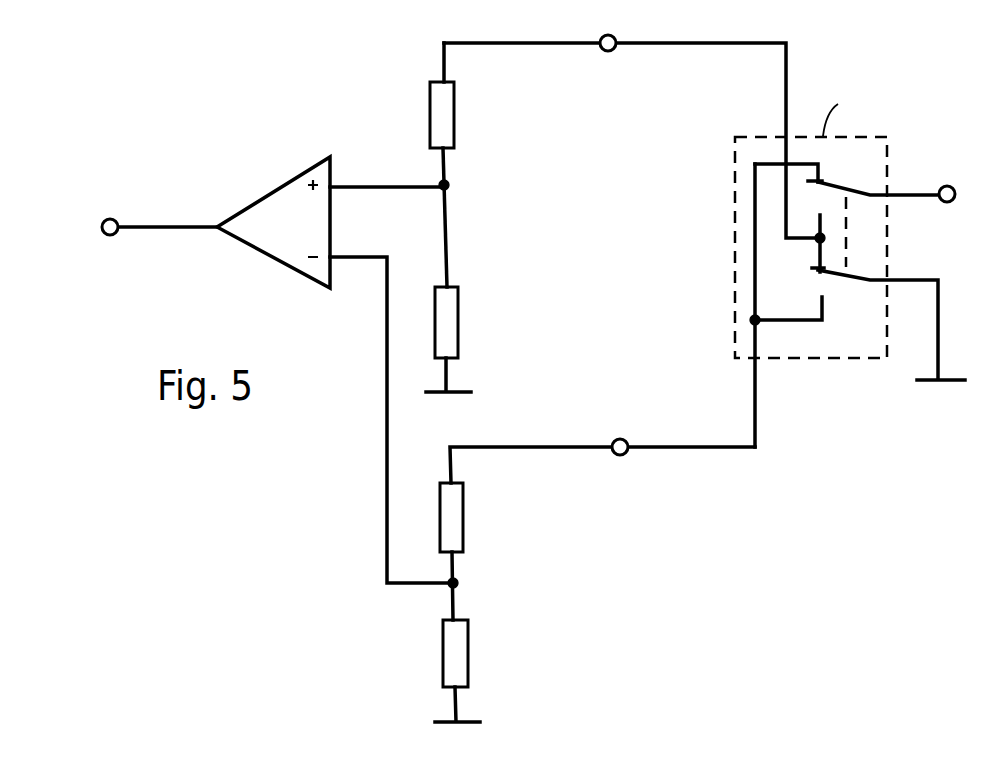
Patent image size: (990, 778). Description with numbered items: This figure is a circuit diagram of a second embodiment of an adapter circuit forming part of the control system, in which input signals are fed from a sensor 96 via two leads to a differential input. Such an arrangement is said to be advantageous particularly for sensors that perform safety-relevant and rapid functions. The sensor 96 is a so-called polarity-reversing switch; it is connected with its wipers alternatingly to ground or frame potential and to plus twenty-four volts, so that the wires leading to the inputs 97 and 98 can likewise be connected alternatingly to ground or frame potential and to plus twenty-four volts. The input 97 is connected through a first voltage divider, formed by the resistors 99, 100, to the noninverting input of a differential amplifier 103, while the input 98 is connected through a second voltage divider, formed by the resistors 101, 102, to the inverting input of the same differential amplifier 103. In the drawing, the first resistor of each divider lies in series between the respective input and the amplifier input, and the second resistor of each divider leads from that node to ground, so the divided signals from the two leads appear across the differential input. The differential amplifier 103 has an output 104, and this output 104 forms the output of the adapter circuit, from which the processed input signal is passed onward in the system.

The sensor 96 is at (859, 265).
The input 97 is at (620, 10).
The input 98 is at (632, 412).
The voltage divider resistor 99 is at (443, 136).
The voltage divider resistor 100 is at (449, 346).
The voltage divider resistor 101 is at (455, 541).
The voltage divider resistor 102 is at (495, 666).
The differential amplifier 103 is at (288, 200).
The output 104 is at (106, 239).